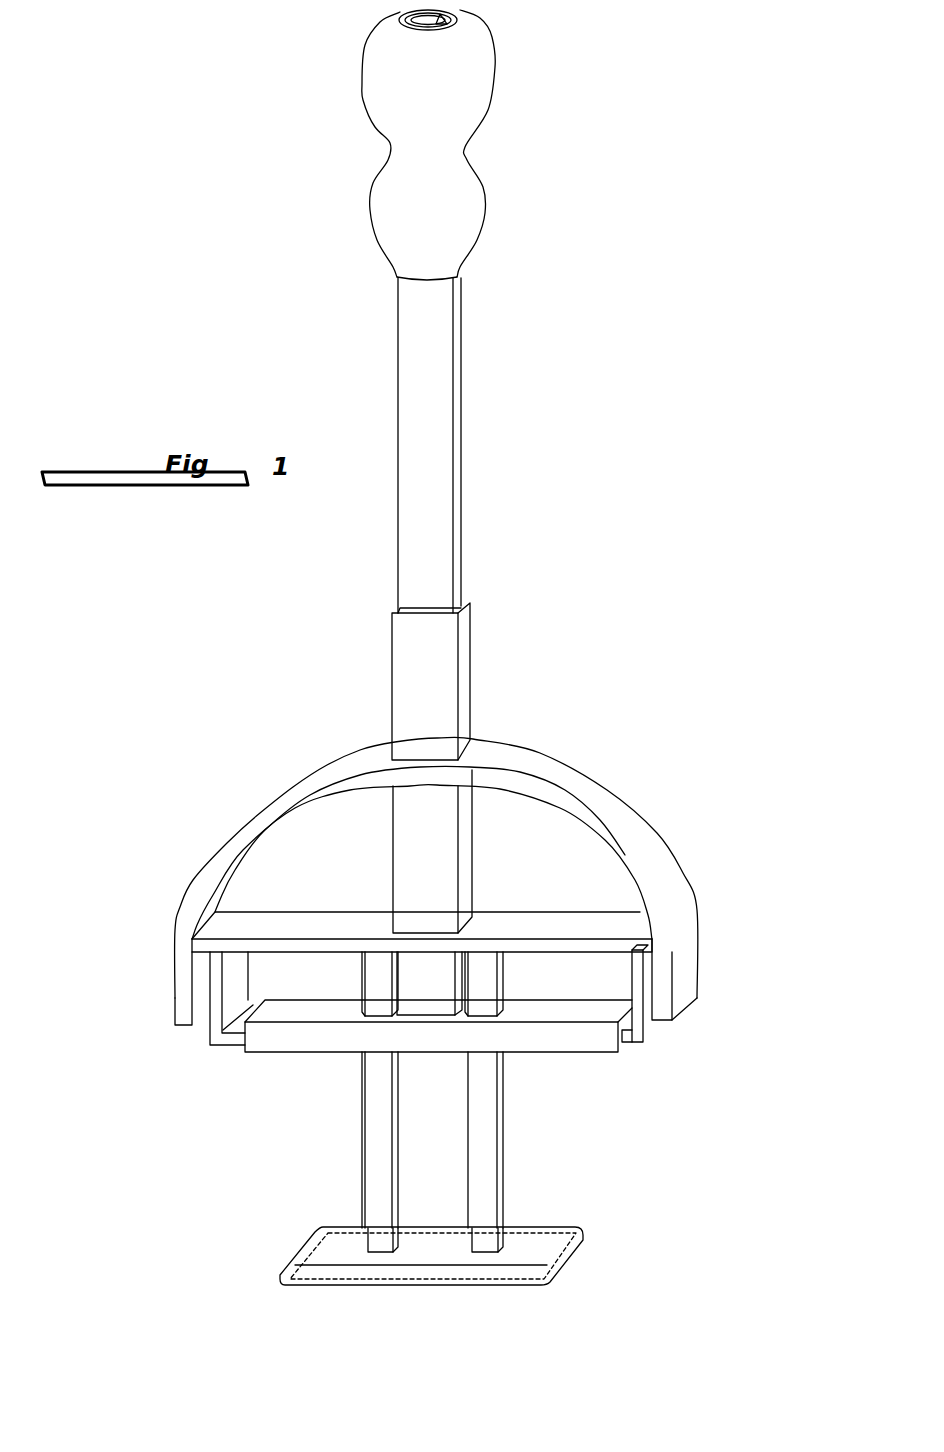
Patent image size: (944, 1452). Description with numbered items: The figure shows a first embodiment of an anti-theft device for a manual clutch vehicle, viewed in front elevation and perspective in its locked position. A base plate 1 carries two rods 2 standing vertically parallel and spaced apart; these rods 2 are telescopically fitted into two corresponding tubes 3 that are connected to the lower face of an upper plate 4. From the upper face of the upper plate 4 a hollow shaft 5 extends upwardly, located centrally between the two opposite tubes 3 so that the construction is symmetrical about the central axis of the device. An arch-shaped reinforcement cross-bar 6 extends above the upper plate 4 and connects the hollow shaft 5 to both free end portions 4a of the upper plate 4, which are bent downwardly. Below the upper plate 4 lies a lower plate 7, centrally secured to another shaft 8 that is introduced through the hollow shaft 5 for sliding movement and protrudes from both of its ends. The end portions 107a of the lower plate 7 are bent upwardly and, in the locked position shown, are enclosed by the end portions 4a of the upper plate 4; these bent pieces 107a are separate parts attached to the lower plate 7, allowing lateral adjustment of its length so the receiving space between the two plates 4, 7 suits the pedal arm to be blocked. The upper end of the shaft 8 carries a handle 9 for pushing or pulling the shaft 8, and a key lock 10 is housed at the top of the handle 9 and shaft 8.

The base plate 1 is at (548, 1243).
The rods 2 is at (382, 1242).
The tubes 3 is at (380, 1152).
The upper plate 4 is at (520, 920).
The end portions of the upper plate 4a is at (683, 983).
The hollow shaft 5 is at (457, 687).
The arch-shaped reinforcement cross-bar 6 is at (590, 793).
The lower plate 7 is at (562, 1046).
The shaft 8 is at (432, 518).
The handle 9 is at (467, 233).
The key lock 10 is at (450, 10).
The end portions of the lower plate 107a is at (222, 1043).